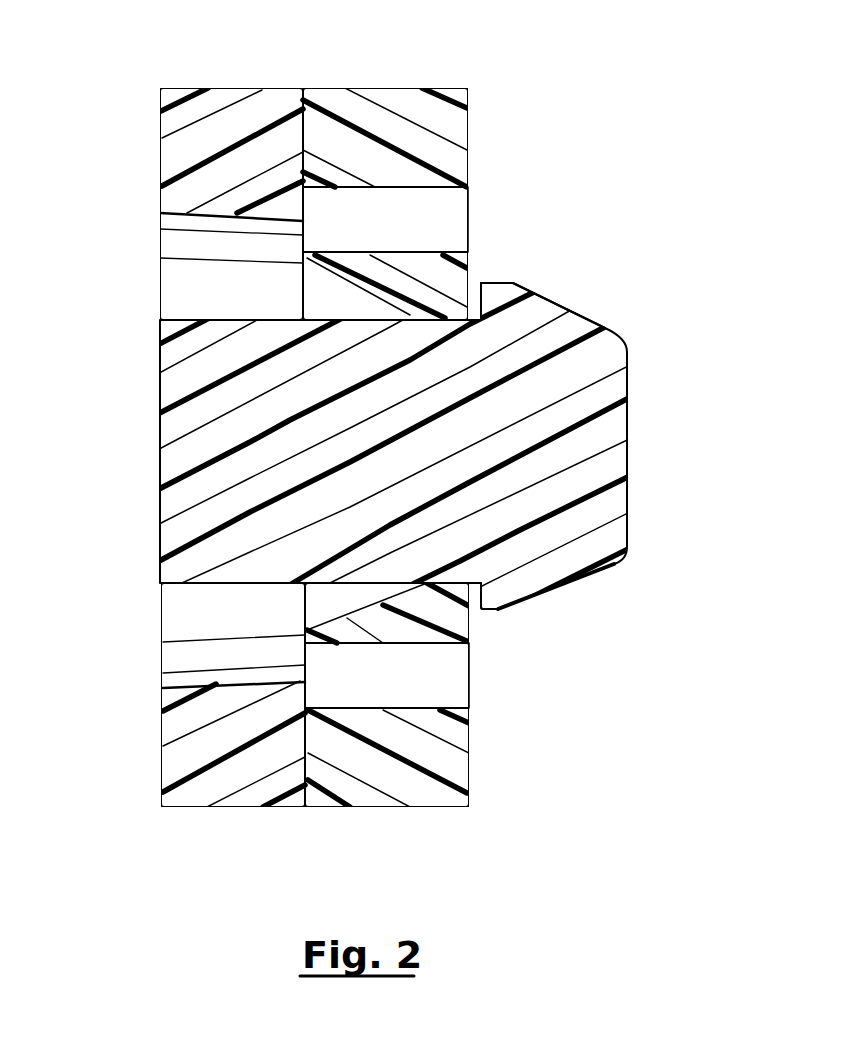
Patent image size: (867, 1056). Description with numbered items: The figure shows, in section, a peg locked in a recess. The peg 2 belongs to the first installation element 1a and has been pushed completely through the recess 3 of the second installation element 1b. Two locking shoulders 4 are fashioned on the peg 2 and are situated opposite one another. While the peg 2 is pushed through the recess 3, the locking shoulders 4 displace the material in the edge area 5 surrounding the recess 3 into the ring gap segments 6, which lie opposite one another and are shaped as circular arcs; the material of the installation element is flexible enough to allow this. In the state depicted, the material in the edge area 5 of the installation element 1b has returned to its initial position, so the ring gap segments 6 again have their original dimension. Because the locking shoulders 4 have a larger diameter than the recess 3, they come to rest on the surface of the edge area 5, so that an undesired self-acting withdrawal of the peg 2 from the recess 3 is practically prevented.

The first installation element 1a is at (177, 412).
The installation element 1b is at (432, 150).
The peg 2 is at (258, 493).
The recess 3 is at (363, 322).
The locking shoulders 4 is at (495, 298).
The edge area 5 is at (443, 280).
The ring gap segments 6 is at (405, 215).